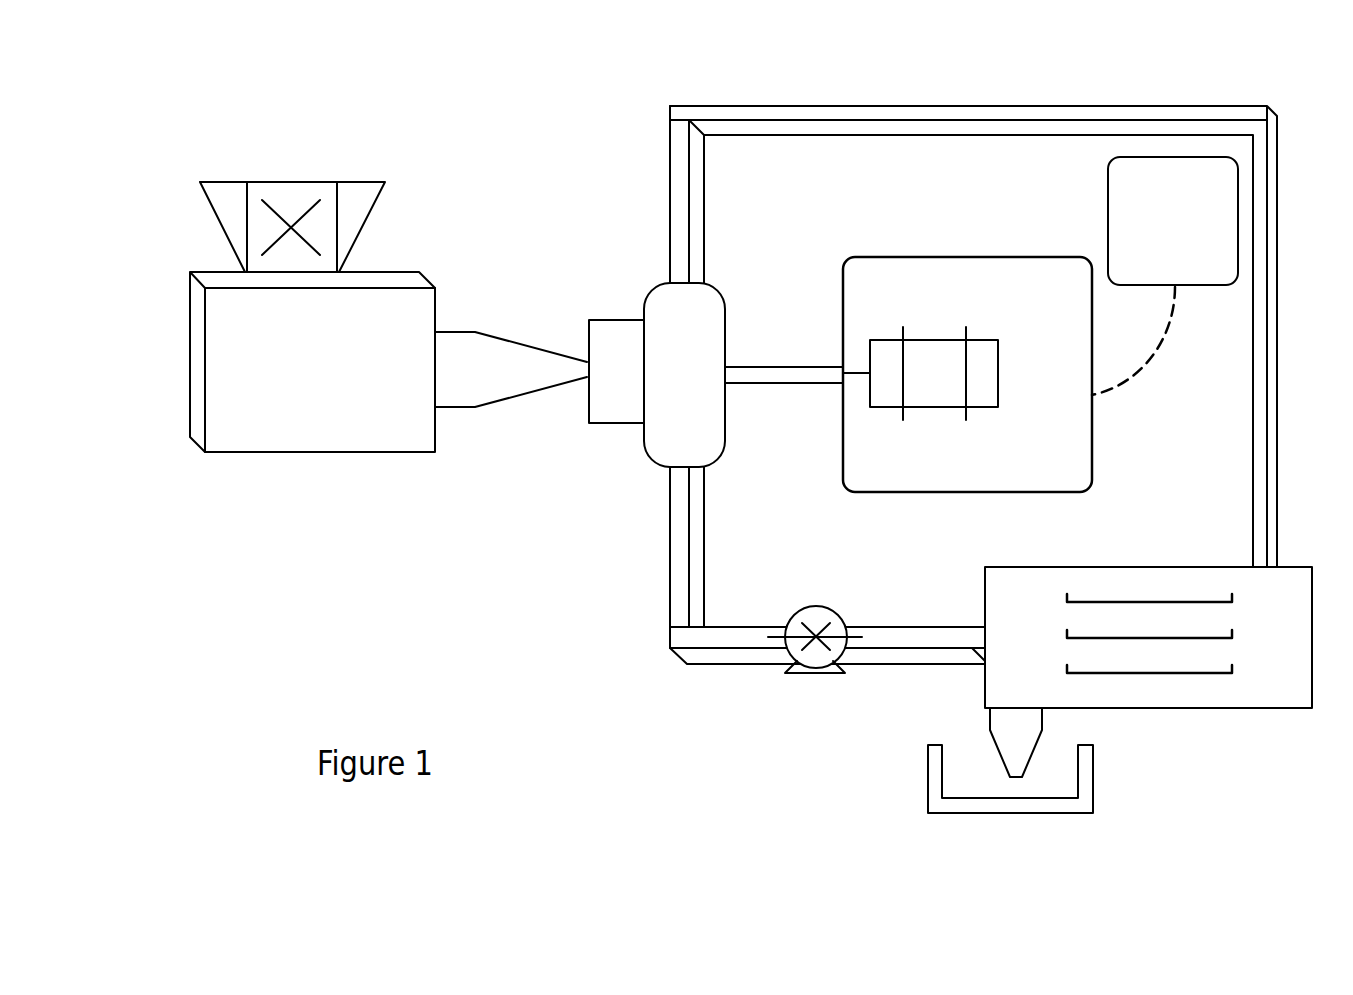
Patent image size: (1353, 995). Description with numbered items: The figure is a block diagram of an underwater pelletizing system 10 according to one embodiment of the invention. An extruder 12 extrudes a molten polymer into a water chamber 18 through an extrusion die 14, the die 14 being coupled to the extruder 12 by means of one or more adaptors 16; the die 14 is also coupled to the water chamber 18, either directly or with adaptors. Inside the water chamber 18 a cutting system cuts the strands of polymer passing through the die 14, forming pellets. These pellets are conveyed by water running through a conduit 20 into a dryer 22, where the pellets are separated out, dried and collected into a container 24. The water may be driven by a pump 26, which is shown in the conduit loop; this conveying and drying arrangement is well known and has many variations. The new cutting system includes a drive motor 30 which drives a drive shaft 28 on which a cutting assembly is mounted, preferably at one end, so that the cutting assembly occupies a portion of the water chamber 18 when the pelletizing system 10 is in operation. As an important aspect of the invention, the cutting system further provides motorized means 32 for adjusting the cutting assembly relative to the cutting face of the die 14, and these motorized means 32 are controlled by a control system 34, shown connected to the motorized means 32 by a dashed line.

The underwater pelletizing system 10 is at (488, 184).
The extruder 12 is at (325, 452).
The extrusion die 14 is at (583, 407).
The adaptors 16 is at (527, 342).
The water chamber 18 is at (648, 452).
The conduit 20 is at (670, 152).
The dryer 22 is at (1193, 708).
The container 24 is at (923, 786).
The pump 26 is at (797, 675).
The drive shaft 28 is at (768, 385).
The drive motor 30 is at (912, 492).
The motorized means 32 is at (930, 257).
The control system 34 is at (1108, 193).